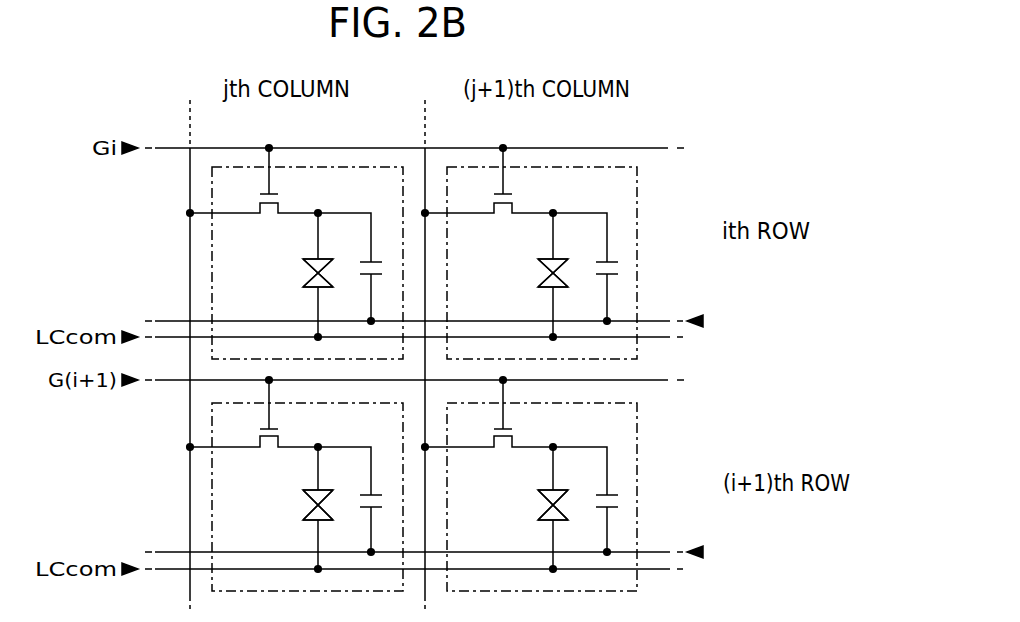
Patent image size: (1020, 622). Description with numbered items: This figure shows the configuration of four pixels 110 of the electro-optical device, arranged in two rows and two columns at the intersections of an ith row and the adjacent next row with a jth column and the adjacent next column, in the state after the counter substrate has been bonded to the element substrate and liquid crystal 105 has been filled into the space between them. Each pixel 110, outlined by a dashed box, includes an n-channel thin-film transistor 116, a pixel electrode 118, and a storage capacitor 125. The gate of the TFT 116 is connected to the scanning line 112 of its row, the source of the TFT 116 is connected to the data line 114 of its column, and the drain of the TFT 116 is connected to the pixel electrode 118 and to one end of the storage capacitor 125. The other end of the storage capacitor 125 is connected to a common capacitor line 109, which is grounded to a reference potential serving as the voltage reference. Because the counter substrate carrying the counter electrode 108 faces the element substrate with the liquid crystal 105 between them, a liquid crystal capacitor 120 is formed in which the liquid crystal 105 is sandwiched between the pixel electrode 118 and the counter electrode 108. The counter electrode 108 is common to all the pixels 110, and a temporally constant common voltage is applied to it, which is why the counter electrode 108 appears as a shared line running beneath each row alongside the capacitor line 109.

The liquid crystal 105 is at (310, 271).
The counter electrode 108 is at (656, 337).
The capacitor line 109 is at (656, 321).
The pixel 110 is at (212, 266).
The scanning line 112 is at (664, 148).
The data line 114 is at (190, 122).
The thin-film transistor 116 is at (269, 222).
The pixel electrode 118 is at (310, 262).
The liquid crystal capacitor 120 is at (333, 272).
The storage capacitor 125 is at (381, 250).